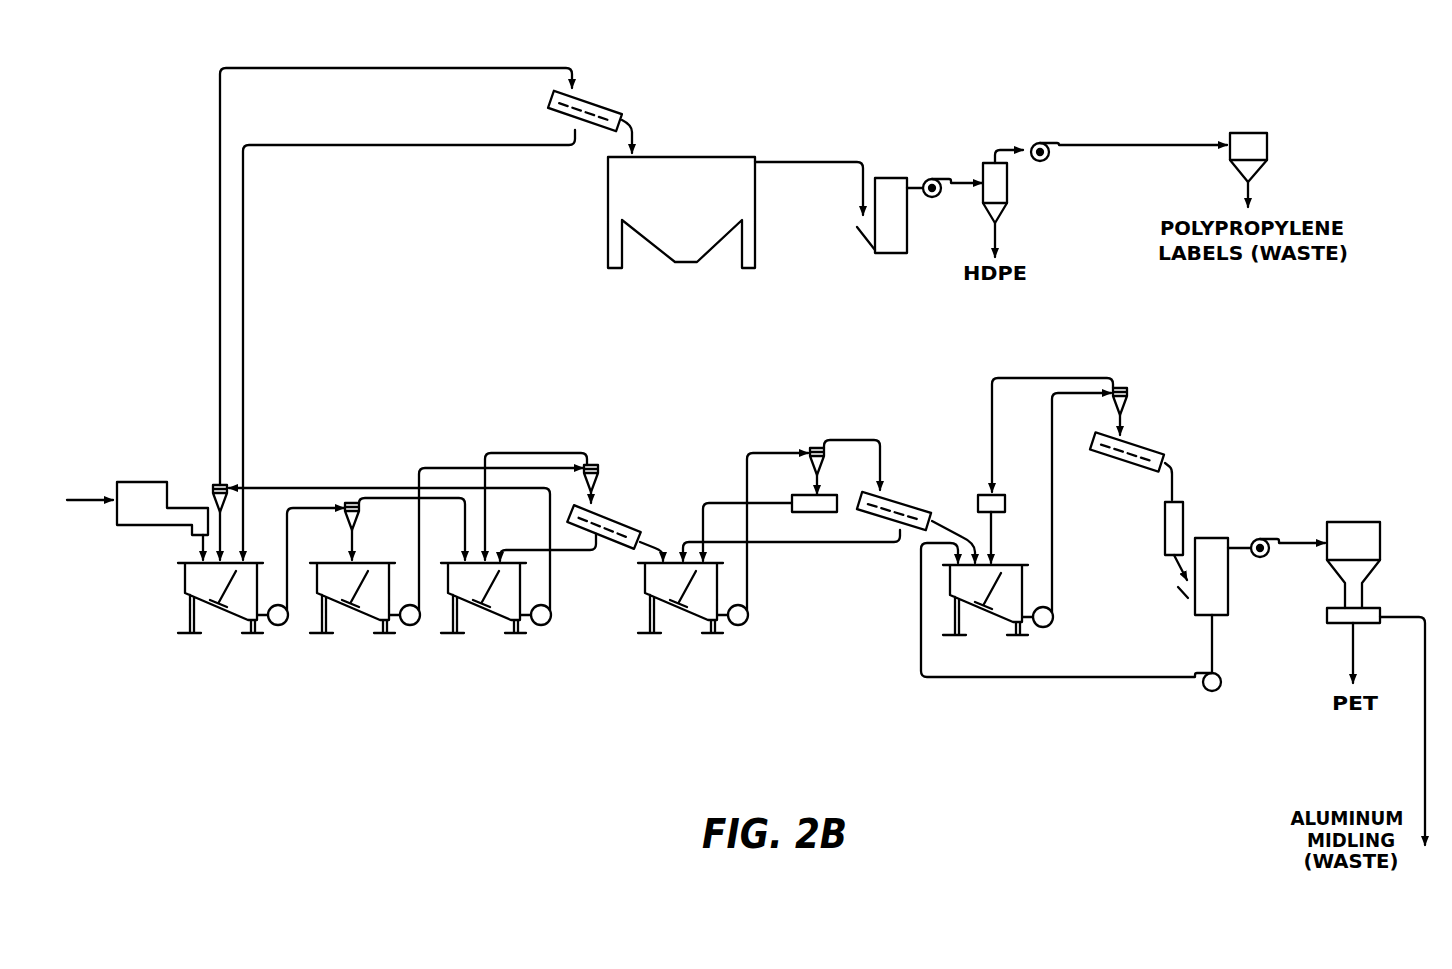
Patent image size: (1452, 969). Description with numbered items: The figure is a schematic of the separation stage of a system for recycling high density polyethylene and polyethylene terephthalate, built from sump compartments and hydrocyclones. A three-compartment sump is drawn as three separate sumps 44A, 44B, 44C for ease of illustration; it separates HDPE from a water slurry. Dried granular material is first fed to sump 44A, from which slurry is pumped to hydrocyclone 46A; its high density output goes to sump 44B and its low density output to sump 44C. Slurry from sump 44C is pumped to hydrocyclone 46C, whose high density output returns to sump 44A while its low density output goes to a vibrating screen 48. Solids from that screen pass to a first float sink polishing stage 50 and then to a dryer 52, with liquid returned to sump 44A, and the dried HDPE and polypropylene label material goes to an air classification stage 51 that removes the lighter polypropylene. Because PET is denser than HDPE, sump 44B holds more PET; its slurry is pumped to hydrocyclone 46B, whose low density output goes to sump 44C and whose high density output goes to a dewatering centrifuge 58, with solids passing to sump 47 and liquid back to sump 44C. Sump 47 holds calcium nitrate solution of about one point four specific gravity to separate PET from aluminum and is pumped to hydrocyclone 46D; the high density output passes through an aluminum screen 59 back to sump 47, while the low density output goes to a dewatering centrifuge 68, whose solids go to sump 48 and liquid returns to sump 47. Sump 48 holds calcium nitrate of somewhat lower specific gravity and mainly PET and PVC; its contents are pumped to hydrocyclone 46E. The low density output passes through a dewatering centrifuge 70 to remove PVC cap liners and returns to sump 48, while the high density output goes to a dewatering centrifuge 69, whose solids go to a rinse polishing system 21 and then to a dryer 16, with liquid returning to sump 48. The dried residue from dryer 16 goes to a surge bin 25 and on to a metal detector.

The dryer 16 is at (1213, 538).
The rinse polishing system 21 is at (1165, 520).
The surge bin 25 is at (1358, 520).
The sump 44A is at (223, 627).
The sump 44B is at (365, 627).
The sump 44C is at (493, 623).
The hydrocyclone 46A is at (348, 485).
The hydrocyclone 46B is at (605, 462).
The hydrocyclone 46C is at (208, 480).
The hydrocyclone 46D is at (807, 442).
The hydrocyclone 46E is at (1137, 403).
The sump 47 is at (687, 628).
The sump / vibrating screen 48 is at (605, 100).
The first float sink polishing stage 50 is at (713, 152).
The air classification stage 51 is at (982, 155).
The dryer 52 is at (892, 173).
The dewatering centrifuge 58 is at (617, 515).
The aluminum screen 59 is at (820, 503).
The dewatering centrifuge 68 is at (900, 497).
The dewatering centrifuge 69 is at (1143, 443).
The dewatering centrifuge 70 is at (997, 490).